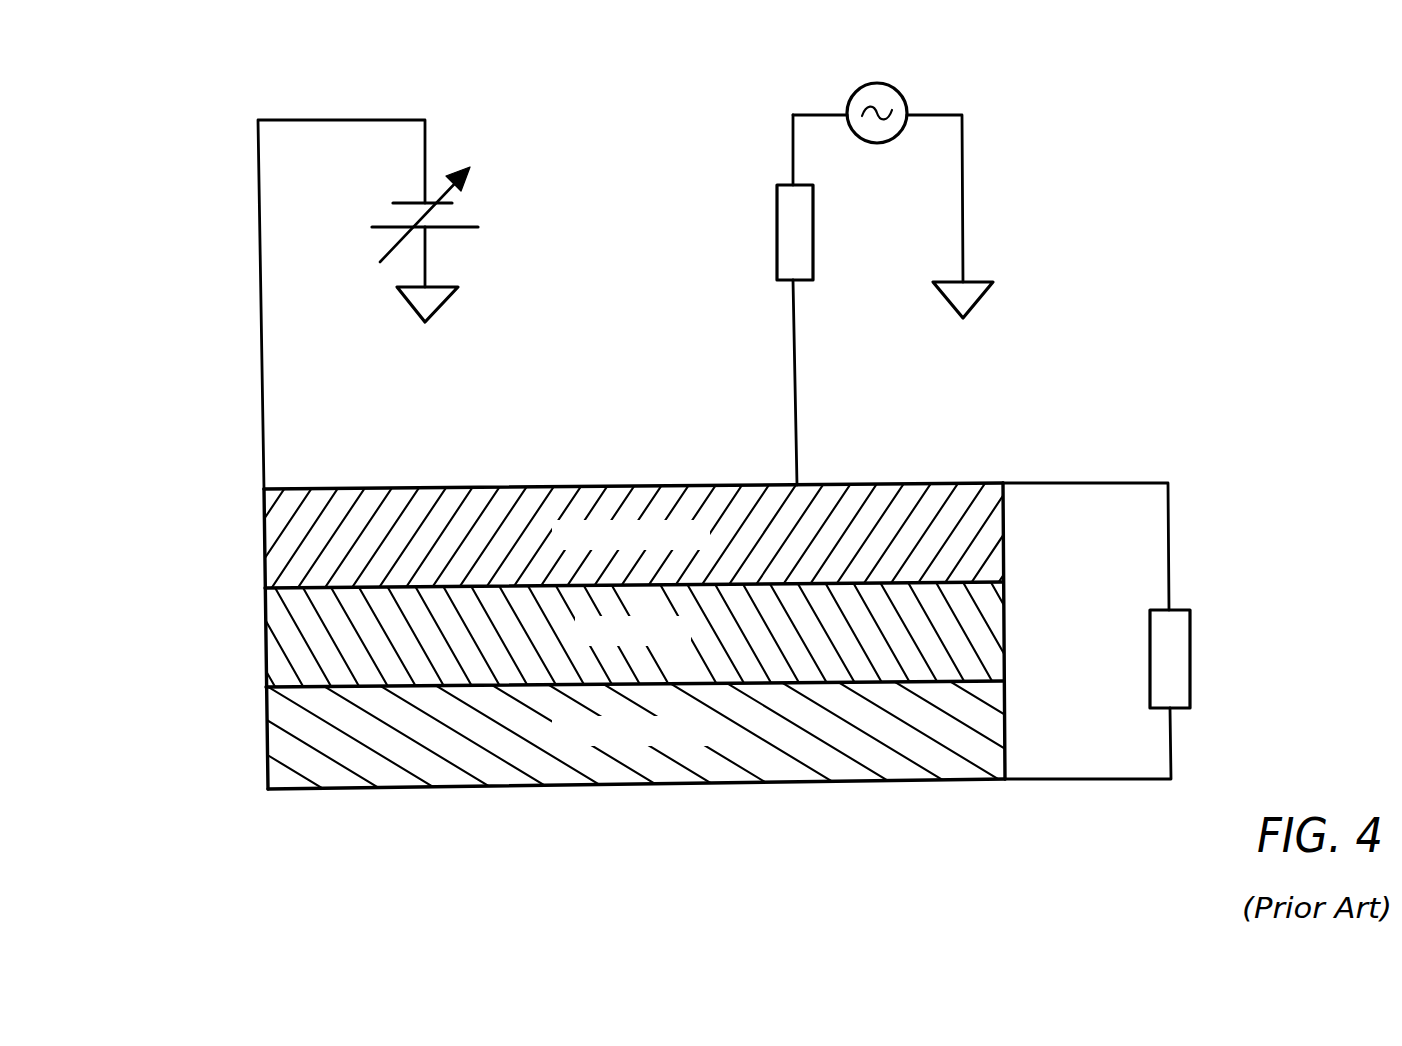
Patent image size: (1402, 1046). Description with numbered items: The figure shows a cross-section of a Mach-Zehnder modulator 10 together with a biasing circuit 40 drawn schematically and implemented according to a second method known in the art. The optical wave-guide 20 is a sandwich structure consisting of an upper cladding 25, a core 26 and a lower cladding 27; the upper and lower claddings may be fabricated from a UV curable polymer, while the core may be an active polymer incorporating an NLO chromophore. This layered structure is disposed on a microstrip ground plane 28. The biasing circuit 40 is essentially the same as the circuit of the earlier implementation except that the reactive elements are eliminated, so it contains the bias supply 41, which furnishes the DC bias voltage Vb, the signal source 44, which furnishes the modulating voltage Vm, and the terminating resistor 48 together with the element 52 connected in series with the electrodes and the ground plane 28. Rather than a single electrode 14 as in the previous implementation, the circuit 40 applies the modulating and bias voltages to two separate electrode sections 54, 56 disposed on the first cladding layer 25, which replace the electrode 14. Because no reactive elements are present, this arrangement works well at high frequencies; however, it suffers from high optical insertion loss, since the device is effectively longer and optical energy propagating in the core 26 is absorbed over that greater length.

The electro-optic modulator device 10 is at (643, 552).
The electrode 14 is at (968, 477).
The optical wave-guide 20 is at (619, 615).
The upper cladding 25 is at (1003, 527).
The core 26 is at (1003, 622).
The lower cladding 27 is at (1003, 728).
The microstrip ground plane 28 is at (663, 783).
The biasing circuit 40 is at (325, 290).
The bias supply 41 is at (461, 213).
The signal source 44 is at (895, 85).
The terminating resistor 48 is at (813, 256).
The blocking capacitor 52 is at (1190, 680).
The electrode section 54 is at (427, 488).
The electrode section 56 is at (848, 483).